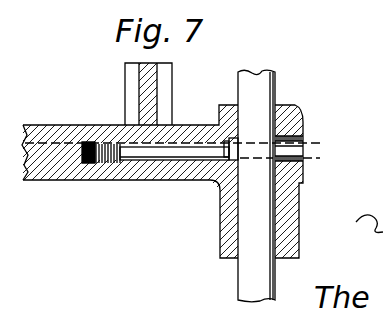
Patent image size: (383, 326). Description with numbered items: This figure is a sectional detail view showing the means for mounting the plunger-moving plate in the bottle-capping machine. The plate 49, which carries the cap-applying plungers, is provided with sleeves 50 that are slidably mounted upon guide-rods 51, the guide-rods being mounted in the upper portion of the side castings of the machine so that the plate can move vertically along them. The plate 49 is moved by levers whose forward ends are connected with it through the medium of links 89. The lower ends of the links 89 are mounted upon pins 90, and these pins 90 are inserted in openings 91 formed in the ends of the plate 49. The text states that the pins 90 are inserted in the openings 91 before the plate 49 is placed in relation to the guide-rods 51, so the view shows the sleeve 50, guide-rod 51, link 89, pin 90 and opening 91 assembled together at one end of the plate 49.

The plate 49 is at (50, 145).
The links 89 is at (148, 90).
The guide-rods 51 is at (256, 90).
The sleeves 50 is at (291, 193).
The pins 90 is at (167, 148).
The openings 91 is at (281, 152).